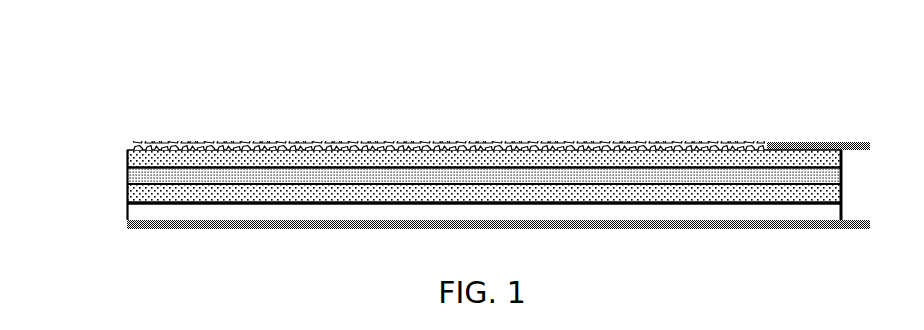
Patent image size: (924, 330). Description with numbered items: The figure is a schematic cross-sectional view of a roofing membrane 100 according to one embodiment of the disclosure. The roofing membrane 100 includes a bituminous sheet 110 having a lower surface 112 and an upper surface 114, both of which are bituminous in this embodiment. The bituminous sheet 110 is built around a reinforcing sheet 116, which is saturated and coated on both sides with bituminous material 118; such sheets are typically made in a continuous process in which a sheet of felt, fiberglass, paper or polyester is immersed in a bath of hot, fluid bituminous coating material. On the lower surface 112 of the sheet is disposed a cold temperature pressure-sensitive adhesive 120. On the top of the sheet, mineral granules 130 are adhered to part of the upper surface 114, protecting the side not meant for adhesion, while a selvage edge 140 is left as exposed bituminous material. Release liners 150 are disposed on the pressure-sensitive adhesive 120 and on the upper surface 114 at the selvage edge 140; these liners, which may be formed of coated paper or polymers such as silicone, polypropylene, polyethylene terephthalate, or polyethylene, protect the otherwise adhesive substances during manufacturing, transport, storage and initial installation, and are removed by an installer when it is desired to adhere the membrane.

The roofing membrane 100 is at (210, 104).
The bituminous sheet 110 is at (112, 148).
The lower surface 112 is at (582, 205).
The upper surface 114 is at (358, 147).
The reinforcing sheet 116 is at (705, 177).
The bituminous material 118 is at (618, 160).
The cold temperature pressure-sensitive adhesive 120 is at (295, 212).
The mineral granules 130 is at (286, 147).
The selvage edge 140 is at (837, 122).
The release liners 150 is at (865, 148).